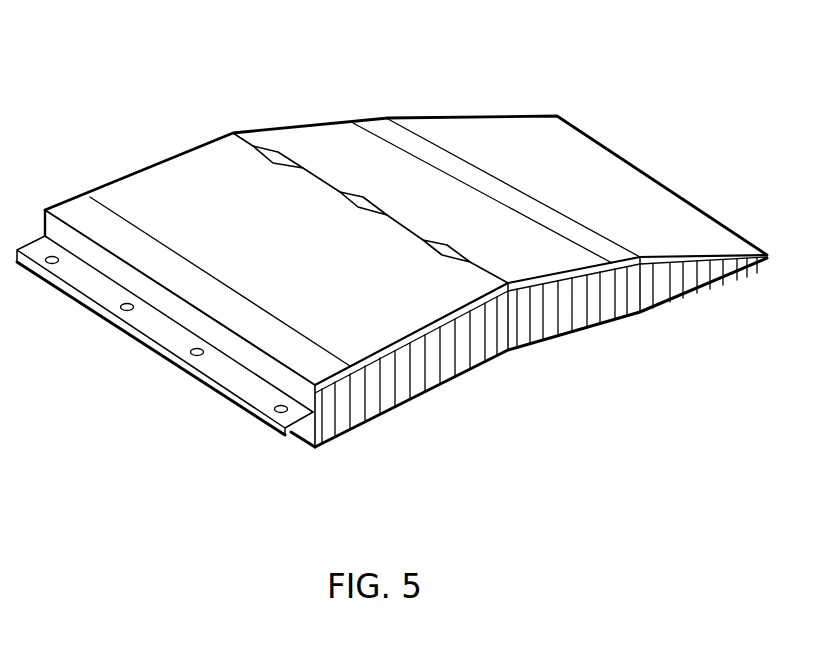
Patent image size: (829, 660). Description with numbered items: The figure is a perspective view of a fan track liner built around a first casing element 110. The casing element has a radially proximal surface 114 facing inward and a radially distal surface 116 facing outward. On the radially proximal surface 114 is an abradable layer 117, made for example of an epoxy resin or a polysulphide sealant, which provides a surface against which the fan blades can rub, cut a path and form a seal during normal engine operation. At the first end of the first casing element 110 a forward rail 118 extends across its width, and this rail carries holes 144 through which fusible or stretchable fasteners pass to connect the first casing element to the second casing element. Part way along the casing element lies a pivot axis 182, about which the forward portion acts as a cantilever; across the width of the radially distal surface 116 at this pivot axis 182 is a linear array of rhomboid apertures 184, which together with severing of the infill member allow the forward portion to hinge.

The first casing element 110 is at (480, 372).
The radially proximal surface 114 is at (577, 332).
The radially distal surface 116 is at (183, 170).
The abradable layer 117 is at (395, 403).
The forward rail 118 is at (240, 407).
The holes 144 is at (193, 357).
The pivot axis 182 is at (318, 178).
The rhomboid apertures 184 is at (268, 146).